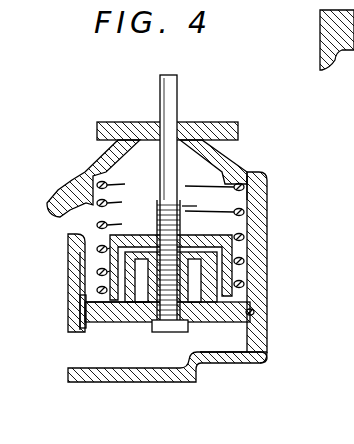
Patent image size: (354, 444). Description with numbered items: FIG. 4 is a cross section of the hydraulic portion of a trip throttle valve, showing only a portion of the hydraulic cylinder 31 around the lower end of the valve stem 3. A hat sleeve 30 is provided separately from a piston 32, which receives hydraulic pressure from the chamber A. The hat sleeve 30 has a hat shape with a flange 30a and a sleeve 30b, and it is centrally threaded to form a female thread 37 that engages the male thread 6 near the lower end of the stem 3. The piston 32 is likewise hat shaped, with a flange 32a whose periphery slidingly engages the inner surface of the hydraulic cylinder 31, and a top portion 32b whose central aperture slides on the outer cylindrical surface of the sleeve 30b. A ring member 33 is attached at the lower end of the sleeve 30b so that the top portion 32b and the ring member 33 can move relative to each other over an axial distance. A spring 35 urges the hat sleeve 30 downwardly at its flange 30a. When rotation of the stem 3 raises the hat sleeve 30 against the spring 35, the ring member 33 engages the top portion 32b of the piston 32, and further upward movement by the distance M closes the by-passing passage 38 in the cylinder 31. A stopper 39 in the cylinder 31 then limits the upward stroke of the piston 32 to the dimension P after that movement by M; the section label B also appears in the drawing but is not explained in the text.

The valve stem 3 is at (176, 100).
The male thread 6 is at (196, 204).
The hat sleeve 30 is at (269, 228).
The flange 30a is at (264, 284).
The sleeve 30b is at (242, 360).
The hydraulic cylinder 31 is at (226, 168).
The piston 32 is at (269, 342).
The flange 32a is at (124, 325).
The top portion 32b is at (140, 240).
The ring member 33 is at (160, 342).
The spring 35 is at (268, 190).
The female thread 37 is at (205, 330).
The by-passing passage 38 is at (86, 332).
The stopper 39 is at (68, 242).
The chamber A is at (134, 348).
The section reference B is at (130, 227).
The dimension P is at (50, 248).
The distance M is at (47, 288).